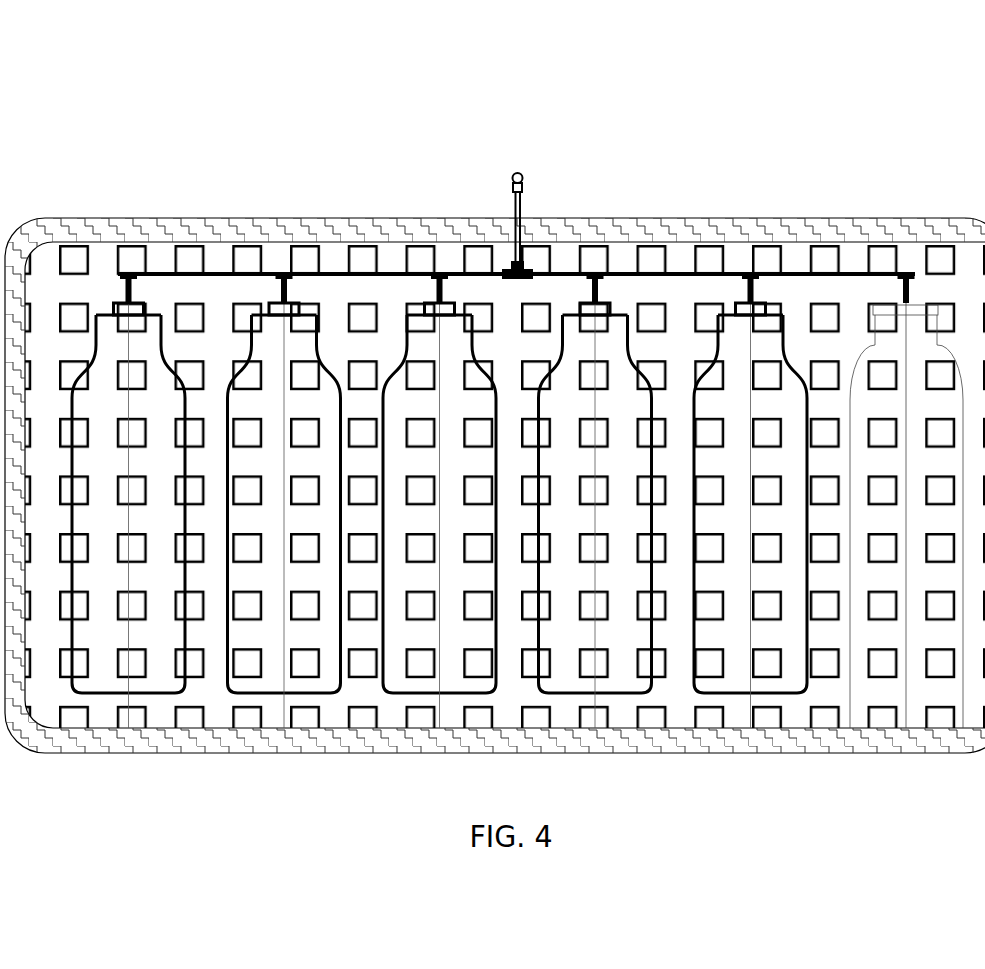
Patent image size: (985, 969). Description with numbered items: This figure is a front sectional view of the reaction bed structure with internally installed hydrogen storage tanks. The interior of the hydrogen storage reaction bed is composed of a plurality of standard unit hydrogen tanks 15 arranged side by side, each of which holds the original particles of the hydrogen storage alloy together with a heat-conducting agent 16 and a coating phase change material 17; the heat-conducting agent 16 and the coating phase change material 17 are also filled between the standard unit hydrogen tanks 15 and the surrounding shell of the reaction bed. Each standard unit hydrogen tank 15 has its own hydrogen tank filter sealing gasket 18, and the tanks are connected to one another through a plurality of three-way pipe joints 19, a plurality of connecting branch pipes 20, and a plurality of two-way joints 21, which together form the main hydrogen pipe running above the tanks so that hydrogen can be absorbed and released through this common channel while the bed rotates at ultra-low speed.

The standard unit hydrogen tank 15 is at (129, 501).
The heat-conducting agent 16 is at (268, 270).
The coating phase change material 17 is at (368, 310).
The hydrogen tank filter sealing gasket 18 is at (592, 301).
The three-way pipe joint 19 is at (752, 282).
The connecting branch pipe 20 is at (829, 271).
The two-way joint 21 is at (906, 278).